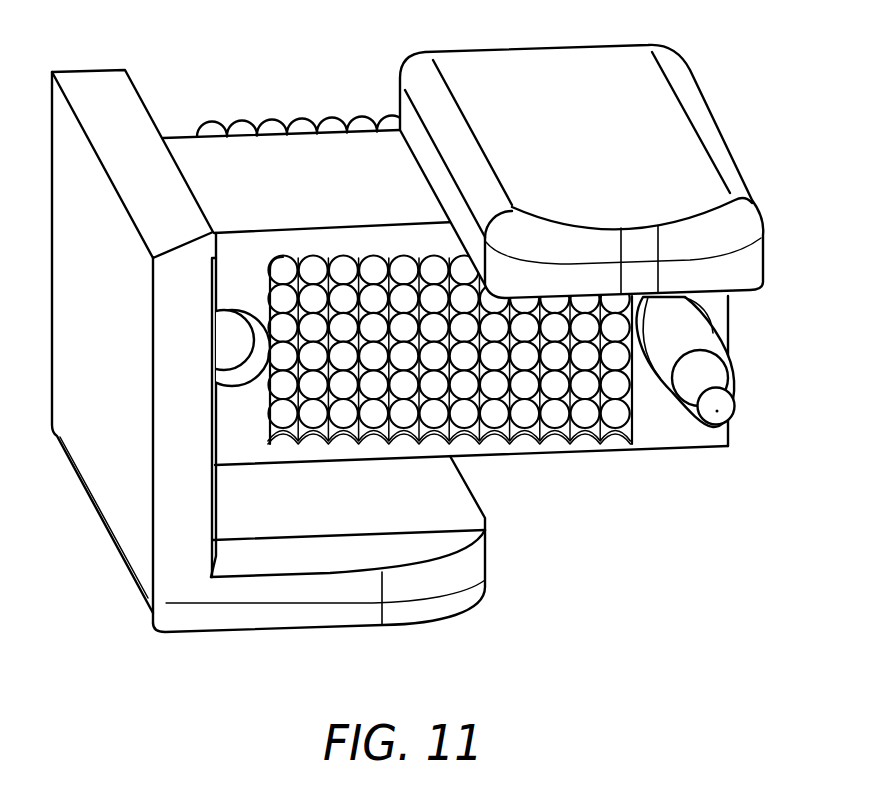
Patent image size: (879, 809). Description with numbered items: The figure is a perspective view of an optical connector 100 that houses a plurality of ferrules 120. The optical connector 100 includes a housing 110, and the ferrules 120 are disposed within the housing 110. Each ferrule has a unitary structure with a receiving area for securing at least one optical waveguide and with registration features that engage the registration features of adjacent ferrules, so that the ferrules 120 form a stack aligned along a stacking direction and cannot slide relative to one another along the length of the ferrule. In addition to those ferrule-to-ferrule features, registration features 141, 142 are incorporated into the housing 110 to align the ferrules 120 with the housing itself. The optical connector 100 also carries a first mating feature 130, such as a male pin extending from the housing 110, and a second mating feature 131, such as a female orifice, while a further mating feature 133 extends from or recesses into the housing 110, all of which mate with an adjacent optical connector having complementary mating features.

The optical connector 100 is at (425, 352).
The housing 110 is at (657, 452).
The ferrules 120 is at (533, 447).
The first mating feature 130 is at (703, 373).
The second mating feature 131 is at (228, 327).
The further mating feature 133 is at (698, 197).
The registration feature 141 is at (347, 257).
The registration feature 142 is at (450, 424).